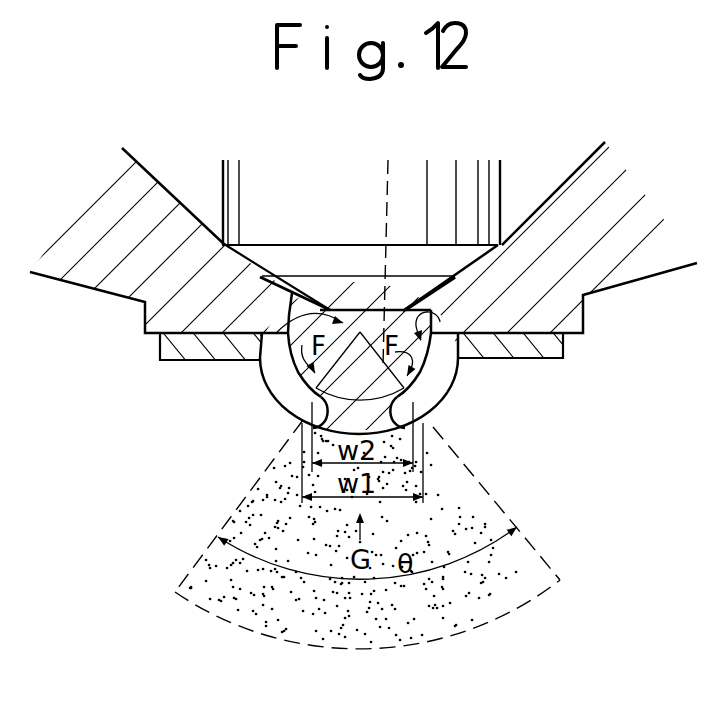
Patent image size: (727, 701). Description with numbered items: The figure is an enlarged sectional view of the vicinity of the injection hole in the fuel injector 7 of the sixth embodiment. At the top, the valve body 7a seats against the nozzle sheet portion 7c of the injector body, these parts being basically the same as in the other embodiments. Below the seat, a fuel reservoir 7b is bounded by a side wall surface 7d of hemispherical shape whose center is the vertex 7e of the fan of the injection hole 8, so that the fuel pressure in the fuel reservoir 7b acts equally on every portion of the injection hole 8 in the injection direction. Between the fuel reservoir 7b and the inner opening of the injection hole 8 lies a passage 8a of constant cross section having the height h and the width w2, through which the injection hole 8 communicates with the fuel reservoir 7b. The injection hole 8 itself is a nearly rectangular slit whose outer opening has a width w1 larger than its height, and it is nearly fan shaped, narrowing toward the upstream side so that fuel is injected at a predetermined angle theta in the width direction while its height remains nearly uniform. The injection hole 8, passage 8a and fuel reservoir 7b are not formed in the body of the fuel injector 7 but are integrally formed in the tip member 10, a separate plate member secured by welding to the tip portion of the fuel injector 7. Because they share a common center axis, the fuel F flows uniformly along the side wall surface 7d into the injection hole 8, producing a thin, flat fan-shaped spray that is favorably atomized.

The fuel injector 7 is at (625, 227).
The valve body 7a is at (383, 183).
The fuel reservoir 7b is at (388, 307).
The nozzle sheet portion 7c is at (488, 261).
The side wall surface 7d is at (462, 348).
The vertex 7e is at (289, 330).
The injection hole 8 is at (423, 418).
The passage 8a is at (303, 427).
The tip member 10 is at (160, 338).